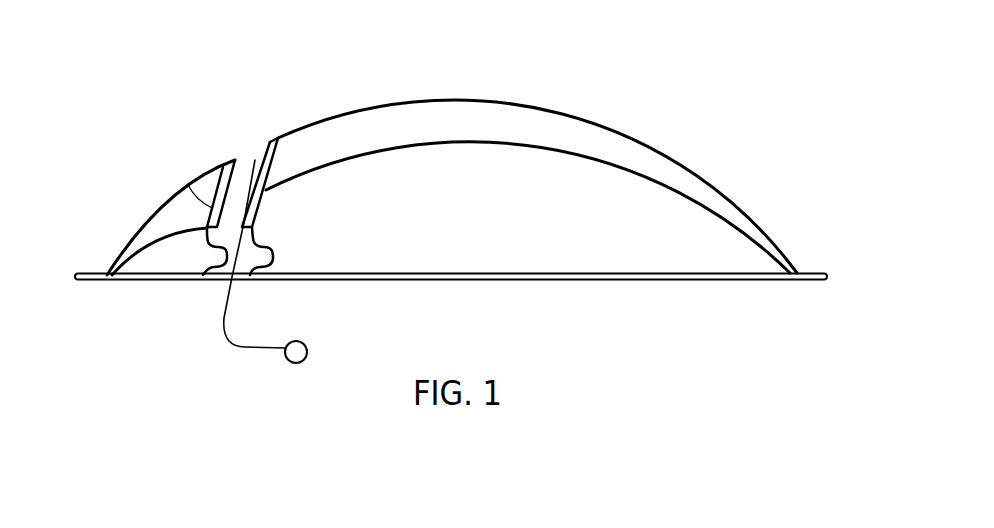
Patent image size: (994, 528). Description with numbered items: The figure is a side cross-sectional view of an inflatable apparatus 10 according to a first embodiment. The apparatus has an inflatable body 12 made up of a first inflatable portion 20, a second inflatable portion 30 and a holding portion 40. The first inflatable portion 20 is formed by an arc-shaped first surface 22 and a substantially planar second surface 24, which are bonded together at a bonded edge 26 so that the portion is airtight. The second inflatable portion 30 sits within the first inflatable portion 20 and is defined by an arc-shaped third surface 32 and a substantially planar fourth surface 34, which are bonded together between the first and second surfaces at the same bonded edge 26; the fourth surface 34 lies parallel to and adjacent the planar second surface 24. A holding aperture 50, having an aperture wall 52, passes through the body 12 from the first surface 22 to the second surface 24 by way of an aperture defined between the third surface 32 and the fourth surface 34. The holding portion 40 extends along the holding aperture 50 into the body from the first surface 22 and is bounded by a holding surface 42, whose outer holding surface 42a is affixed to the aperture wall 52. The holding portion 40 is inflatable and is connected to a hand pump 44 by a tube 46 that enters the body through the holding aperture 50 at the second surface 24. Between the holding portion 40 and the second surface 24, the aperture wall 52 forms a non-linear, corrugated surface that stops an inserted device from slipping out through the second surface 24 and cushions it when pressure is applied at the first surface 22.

The inflatable apparatus 10 is at (831, 156).
The inflatable body 12 is at (607, 128).
The first inflatable portion 20 is at (347, 130).
The first surface 22 is at (402, 105).
The third surface 32 is at (502, 142).
The second inflatable portion 30 is at (638, 203).
The fourth surface 34 is at (653, 272).
The bonded edge 26 is at (93, 273).
The second surface 24 is at (793, 283).
The holding portion 40 is at (233, 158).
The holding aperture 50 is at (247, 157).
The holding surface 42 is at (258, 155).
The outer holding surface 42a is at (281, 157).
The aperture wall 52 is at (268, 240).
The tube 46 is at (252, 347).
The hand pump 44 is at (313, 348).